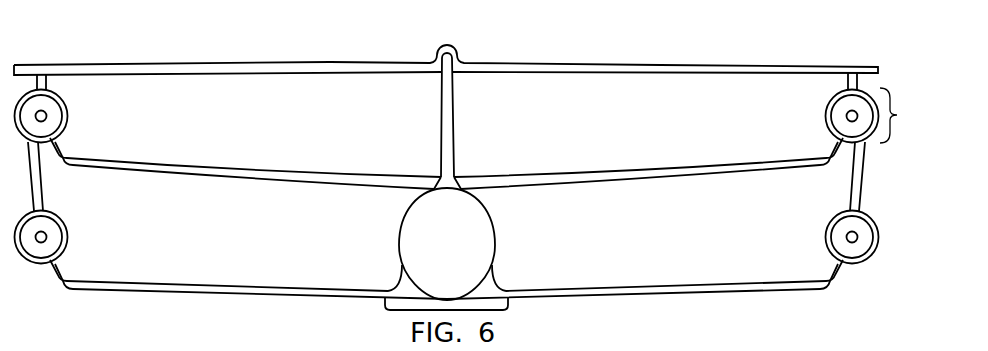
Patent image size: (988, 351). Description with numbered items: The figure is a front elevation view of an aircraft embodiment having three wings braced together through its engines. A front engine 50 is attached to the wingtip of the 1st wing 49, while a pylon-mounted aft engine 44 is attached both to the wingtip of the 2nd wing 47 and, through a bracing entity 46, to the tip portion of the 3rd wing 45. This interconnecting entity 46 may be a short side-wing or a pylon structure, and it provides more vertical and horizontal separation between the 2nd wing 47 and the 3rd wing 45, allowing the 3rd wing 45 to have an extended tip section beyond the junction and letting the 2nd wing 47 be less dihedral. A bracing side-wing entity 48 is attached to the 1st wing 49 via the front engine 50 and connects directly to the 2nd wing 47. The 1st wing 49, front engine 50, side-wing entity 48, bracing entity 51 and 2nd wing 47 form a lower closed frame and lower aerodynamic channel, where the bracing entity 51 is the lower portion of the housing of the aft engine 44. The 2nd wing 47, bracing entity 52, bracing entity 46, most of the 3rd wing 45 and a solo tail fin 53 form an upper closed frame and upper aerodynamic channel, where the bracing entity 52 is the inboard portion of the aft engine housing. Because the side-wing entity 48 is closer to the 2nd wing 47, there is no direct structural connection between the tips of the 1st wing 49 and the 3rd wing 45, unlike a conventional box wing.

The aft engine 44 is at (903, 115).
The 3rd wing 45 is at (878, 57).
The bracing entity 46 is at (847, 77).
The 2nd wing 47 is at (725, 170).
The bracing side-wing entity 48 is at (864, 168).
The 1st wing 49 is at (697, 287).
The front engine 50 is at (872, 232).
The bracing entity 51 is at (851, 150).
The bracing entity 52 is at (826, 122).
The solo tail fin 53 is at (452, 110).